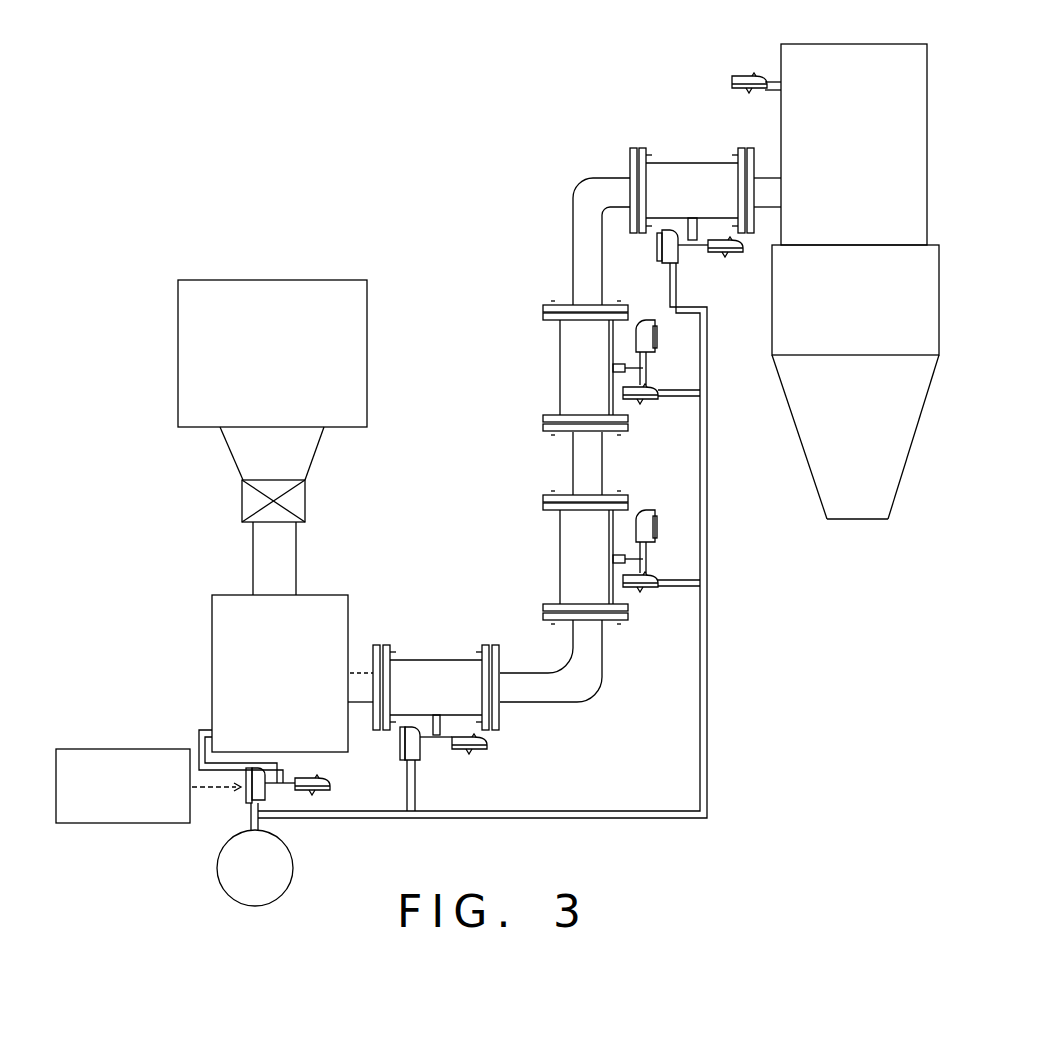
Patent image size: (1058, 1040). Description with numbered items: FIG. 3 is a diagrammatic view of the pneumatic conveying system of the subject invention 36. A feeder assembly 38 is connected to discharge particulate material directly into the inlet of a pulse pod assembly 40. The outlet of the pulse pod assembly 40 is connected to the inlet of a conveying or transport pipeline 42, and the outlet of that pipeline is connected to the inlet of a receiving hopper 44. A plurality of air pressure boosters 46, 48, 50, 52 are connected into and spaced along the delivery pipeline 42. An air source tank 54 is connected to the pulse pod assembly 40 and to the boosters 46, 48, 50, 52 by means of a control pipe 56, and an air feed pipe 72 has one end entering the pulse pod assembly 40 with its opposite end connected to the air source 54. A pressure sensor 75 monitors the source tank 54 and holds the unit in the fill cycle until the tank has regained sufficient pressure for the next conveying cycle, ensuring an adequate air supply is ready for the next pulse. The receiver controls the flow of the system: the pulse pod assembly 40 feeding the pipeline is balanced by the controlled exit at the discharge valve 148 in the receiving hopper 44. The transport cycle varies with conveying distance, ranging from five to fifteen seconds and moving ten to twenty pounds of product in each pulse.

The subject invention 36 is at (457, 552).
The feeder assembly 38 is at (278, 375).
The pulse pod assembly 40 is at (293, 693).
The conveying or transport pipeline 42 is at (603, 682).
The receiving hopper 44 is at (866, 318).
The air pressure booster 46 is at (452, 660).
The air pressure booster 48 is at (560, 573).
The air pressure booster 50 is at (560, 385).
The air pressure booster 52 is at (700, 162).
The air source tank 54 is at (270, 881).
The control pipe 56 is at (553, 811).
The air feed pipe 72 is at (205, 733).
The pressure sensor 75 is at (152, 825).
The discharge valve 148 is at (732, 78).